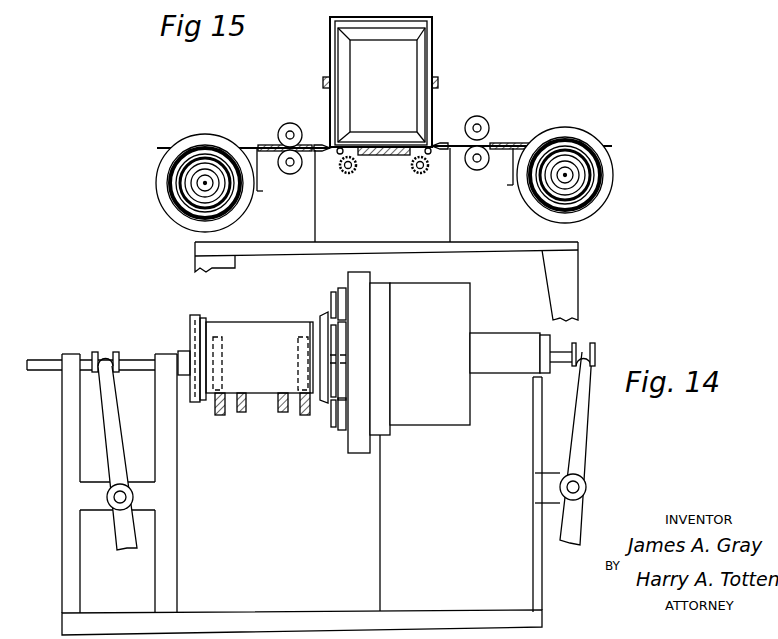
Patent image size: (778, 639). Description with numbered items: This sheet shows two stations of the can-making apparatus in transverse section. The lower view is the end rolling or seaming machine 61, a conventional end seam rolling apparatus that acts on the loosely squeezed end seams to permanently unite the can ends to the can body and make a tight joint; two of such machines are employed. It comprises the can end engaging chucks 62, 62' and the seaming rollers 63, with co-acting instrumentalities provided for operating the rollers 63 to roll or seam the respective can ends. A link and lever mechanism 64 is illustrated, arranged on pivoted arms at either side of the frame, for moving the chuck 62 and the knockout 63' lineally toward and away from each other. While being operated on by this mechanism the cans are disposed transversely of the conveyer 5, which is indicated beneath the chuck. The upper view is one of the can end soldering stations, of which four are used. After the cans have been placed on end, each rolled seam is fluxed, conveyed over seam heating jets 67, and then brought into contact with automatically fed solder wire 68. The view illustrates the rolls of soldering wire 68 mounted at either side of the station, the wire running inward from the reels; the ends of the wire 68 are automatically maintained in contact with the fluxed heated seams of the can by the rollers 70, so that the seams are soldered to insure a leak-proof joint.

In FIG. 14, the conveyer 5 is at (217, 415).
In FIG. 14, the end rolling mechanism 61 is at (518, 578).
In FIG. 14, the can end engaging chuck 62 is at (179, 348).
In FIG. 14, the can end engaging chuck 62' is at (290, 347).
In FIG. 14, the seaming rollers 63 is at (318, 374).
In FIG. 14, the knockout 63' is at (403, 360).
In FIG. 14, the link and lever mechanism 64 is at (113, 453).
In FIG. 15, the seam heating jets 67 is at (412, 170).
In FIG. 15, the solder wire 68 is at (228, 148).
In FIG. 15, the rollers 70 is at (288, 123).